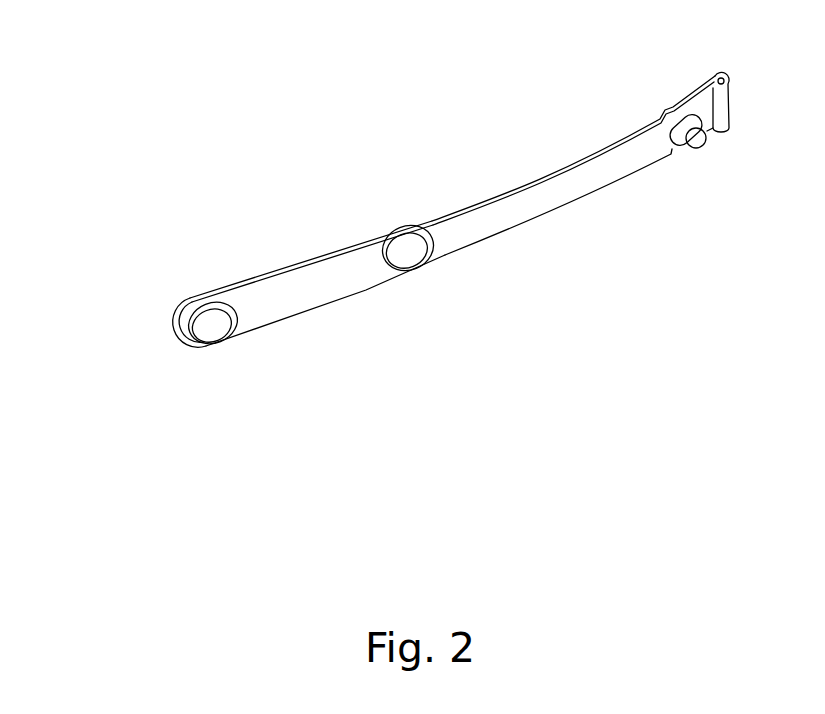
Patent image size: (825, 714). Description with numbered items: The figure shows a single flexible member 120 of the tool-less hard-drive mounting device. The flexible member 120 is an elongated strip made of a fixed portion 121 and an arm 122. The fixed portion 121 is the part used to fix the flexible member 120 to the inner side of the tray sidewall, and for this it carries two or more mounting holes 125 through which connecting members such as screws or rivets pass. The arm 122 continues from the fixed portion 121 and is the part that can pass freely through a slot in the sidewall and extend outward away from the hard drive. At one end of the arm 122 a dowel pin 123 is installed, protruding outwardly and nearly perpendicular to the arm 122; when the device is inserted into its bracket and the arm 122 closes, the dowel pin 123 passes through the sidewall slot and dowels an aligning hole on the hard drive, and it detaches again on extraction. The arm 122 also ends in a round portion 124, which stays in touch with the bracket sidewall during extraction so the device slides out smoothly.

The flexible member 120 is at (105, 65).
The fixed portion 121 is at (298, 280).
The arm 122 is at (580, 175).
The dowel pin 123 is at (688, 138).
The round portion 124 is at (727, 102).
The mounting holes 125 is at (213, 322).